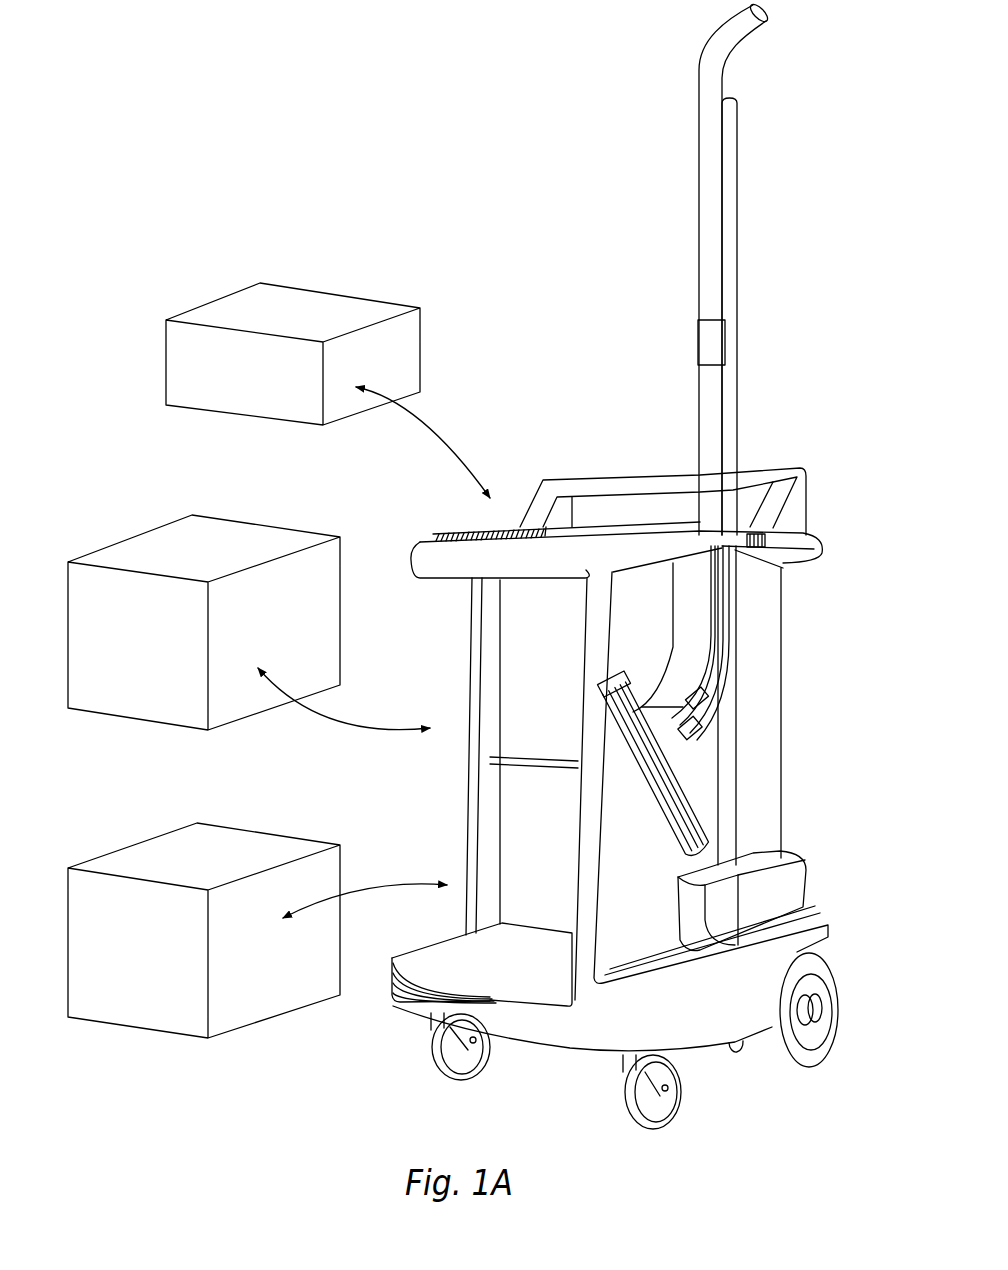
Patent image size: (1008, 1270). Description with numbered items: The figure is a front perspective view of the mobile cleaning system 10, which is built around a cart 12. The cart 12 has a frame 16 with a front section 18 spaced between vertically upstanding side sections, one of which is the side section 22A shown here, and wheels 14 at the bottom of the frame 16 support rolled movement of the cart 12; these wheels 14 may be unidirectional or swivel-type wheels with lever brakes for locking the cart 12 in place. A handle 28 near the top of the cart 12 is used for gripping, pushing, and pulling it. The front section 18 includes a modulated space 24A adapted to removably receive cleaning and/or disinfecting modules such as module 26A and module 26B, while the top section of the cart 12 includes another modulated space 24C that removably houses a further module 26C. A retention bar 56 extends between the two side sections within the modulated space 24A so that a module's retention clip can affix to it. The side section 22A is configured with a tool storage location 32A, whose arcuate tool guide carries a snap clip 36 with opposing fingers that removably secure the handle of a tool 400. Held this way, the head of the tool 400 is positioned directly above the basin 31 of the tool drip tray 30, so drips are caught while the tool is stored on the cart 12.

The mobile cleaning system 10 is at (764, 426).
The cart 12 is at (422, 561).
The wheels 14 is at (821, 957).
The frame 16 is at (738, 1046).
The front section 18 is at (513, 628).
The side section 22A is at (771, 612).
The modulated space 24A is at (447, 779).
The modulated space 24C is at (477, 527).
The cleaning and/or disinfecting module 26A is at (173, 537).
The cleaning and/or disinfecting module 26B is at (173, 843).
The cleaning and/or disinfecting module 26C is at (233, 306).
The handle 28 is at (626, 476).
The tool drip tray 30 is at (820, 912).
The basin 31 is at (668, 958).
The tool storage location 32A is at (758, 679).
The snap clip 36 is at (682, 713).
The retention bar 56 is at (702, 767).
The tool 400 is at (698, 198).